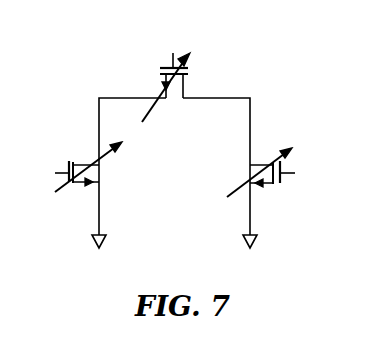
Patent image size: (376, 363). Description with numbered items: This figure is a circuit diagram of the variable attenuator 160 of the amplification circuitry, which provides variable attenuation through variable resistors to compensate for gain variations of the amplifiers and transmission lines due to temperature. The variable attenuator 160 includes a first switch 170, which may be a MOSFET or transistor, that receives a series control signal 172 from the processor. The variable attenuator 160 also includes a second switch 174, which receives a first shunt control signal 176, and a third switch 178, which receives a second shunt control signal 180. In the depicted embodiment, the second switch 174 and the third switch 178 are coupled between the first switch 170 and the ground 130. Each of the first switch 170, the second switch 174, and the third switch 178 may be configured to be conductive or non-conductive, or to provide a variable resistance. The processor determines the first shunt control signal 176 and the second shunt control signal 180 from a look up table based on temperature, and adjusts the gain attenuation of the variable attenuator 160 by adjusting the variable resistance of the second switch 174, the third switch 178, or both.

The variable attenuator 160 is at (250, 58).
The ground 130 is at (92, 245).
The first switch 170 is at (148, 76).
The series control signal 172 is at (172, 57).
The second switch 174 is at (72, 183).
The first shunt control signal 176 is at (78, 184).
The third switch 178 is at (273, 186).
The second shunt control signal 180 is at (292, 175).